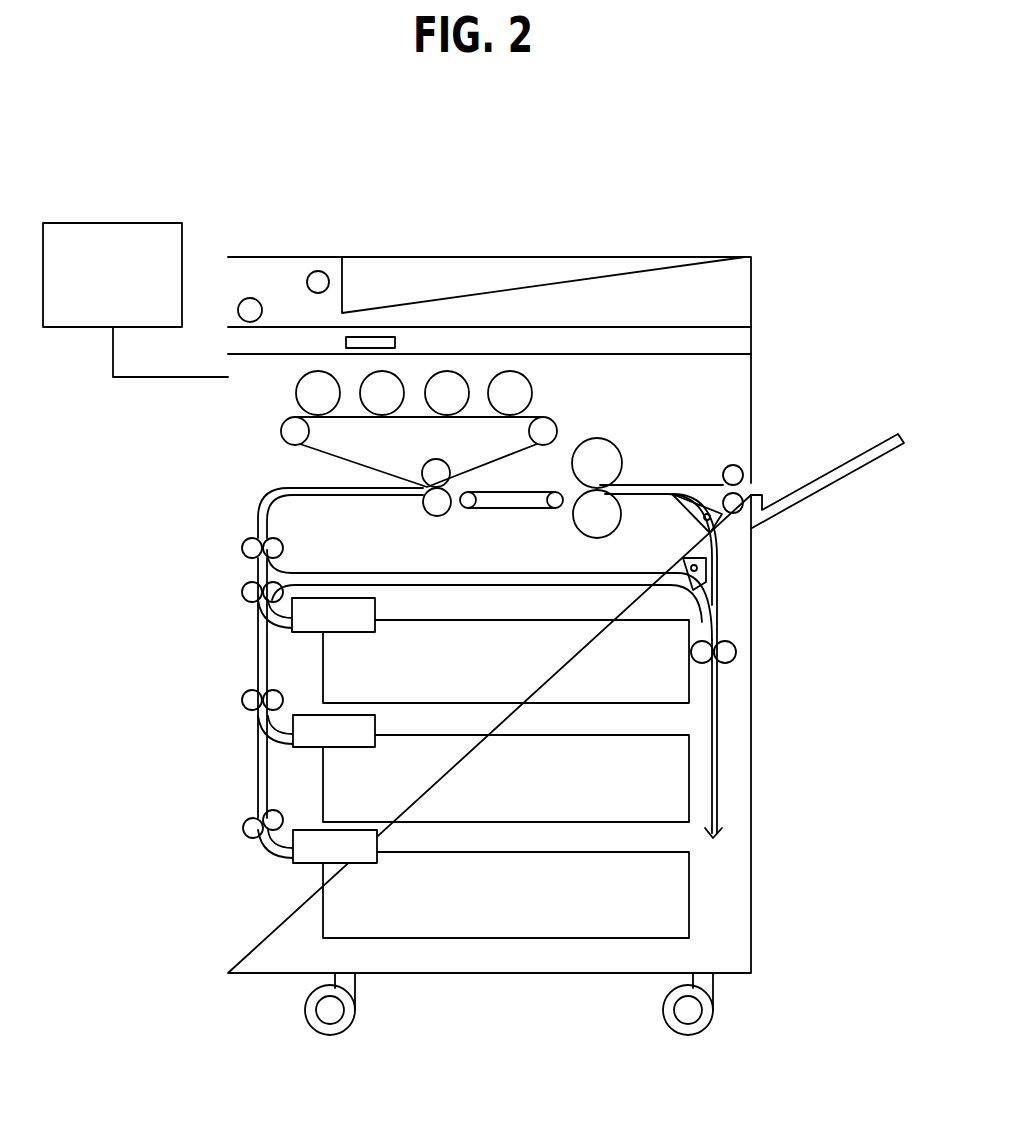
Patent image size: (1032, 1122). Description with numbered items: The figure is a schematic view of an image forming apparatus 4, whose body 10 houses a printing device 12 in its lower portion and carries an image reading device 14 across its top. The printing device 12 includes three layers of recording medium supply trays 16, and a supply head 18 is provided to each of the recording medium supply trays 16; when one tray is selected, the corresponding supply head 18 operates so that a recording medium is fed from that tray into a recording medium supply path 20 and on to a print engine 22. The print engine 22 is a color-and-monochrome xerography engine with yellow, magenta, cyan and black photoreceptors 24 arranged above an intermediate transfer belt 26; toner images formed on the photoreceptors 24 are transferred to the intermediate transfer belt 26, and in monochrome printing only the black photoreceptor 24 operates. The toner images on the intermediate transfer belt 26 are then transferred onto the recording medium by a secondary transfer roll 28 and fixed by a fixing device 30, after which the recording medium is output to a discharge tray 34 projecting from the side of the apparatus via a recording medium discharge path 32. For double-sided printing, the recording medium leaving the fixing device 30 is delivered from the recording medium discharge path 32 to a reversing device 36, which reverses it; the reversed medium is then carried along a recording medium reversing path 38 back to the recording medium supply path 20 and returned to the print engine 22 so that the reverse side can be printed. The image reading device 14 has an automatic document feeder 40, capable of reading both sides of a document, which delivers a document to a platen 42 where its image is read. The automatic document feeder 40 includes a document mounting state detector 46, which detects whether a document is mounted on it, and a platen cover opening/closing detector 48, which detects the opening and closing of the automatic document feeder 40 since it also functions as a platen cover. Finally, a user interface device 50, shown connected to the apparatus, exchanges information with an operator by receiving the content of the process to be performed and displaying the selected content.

The image forming apparatus 4 is at (529, 1088).
The image forming apparatus body 10 is at (768, 399).
The printing device 12 is at (226, 462).
The image reading device 14 is at (756, 298).
The recording medium supply tray 16 is at (612, 706).
The supply head 18 is at (305, 634).
The recording medium supply path 20 is at (266, 510).
The print engine 22 is at (272, 425).
The photoreceptor 24 is at (528, 393).
The intermediate transfer belt 26 is at (308, 446).
The secondary transfer roll 28 is at (440, 508).
The fixing device 30 is at (621, 462).
The recording medium discharge path 32 is at (660, 496).
The discharge tray 34 is at (864, 448).
The reversing device 36 is at (715, 737).
The recording medium reversing path 38 is at (549, 574).
The automatic document feeder 40 is at (258, 266).
The platen 42 is at (392, 336).
The document mounting state detector 46 is at (325, 270).
The platen cover opening/closing detector 48 is at (262, 304).
The user interface device 50 is at (148, 222).